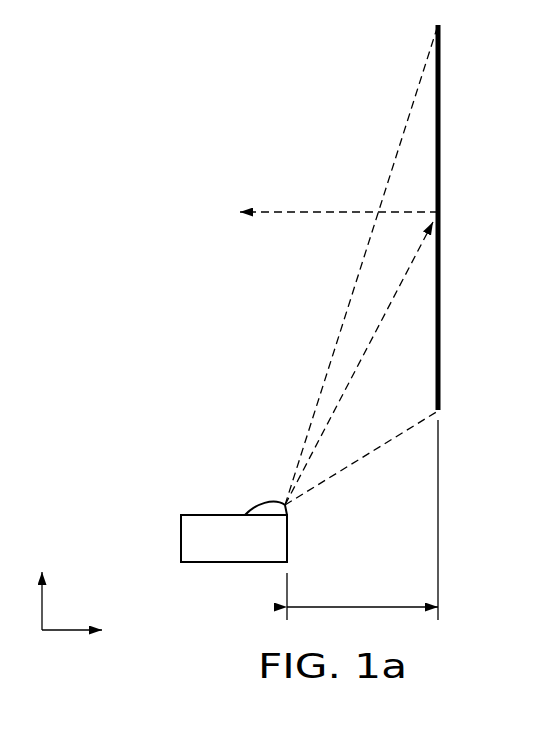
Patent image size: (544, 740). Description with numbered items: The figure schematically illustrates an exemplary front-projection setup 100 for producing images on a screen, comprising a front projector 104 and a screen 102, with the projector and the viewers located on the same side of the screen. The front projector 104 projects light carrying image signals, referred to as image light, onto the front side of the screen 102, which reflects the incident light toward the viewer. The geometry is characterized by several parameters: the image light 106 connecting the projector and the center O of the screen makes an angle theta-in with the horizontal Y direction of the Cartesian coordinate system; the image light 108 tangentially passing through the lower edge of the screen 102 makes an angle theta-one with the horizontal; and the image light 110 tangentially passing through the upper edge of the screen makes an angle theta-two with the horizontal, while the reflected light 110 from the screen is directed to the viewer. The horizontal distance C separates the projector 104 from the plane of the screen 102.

The front-projection setup 100 is at (262, 130).
The screen 102 is at (440, 107).
The front projector 104 is at (181, 537).
The image light 106 is at (396, 291).
The image light 108 is at (340, 471).
The image light / reflected light 110 is at (404, 130).